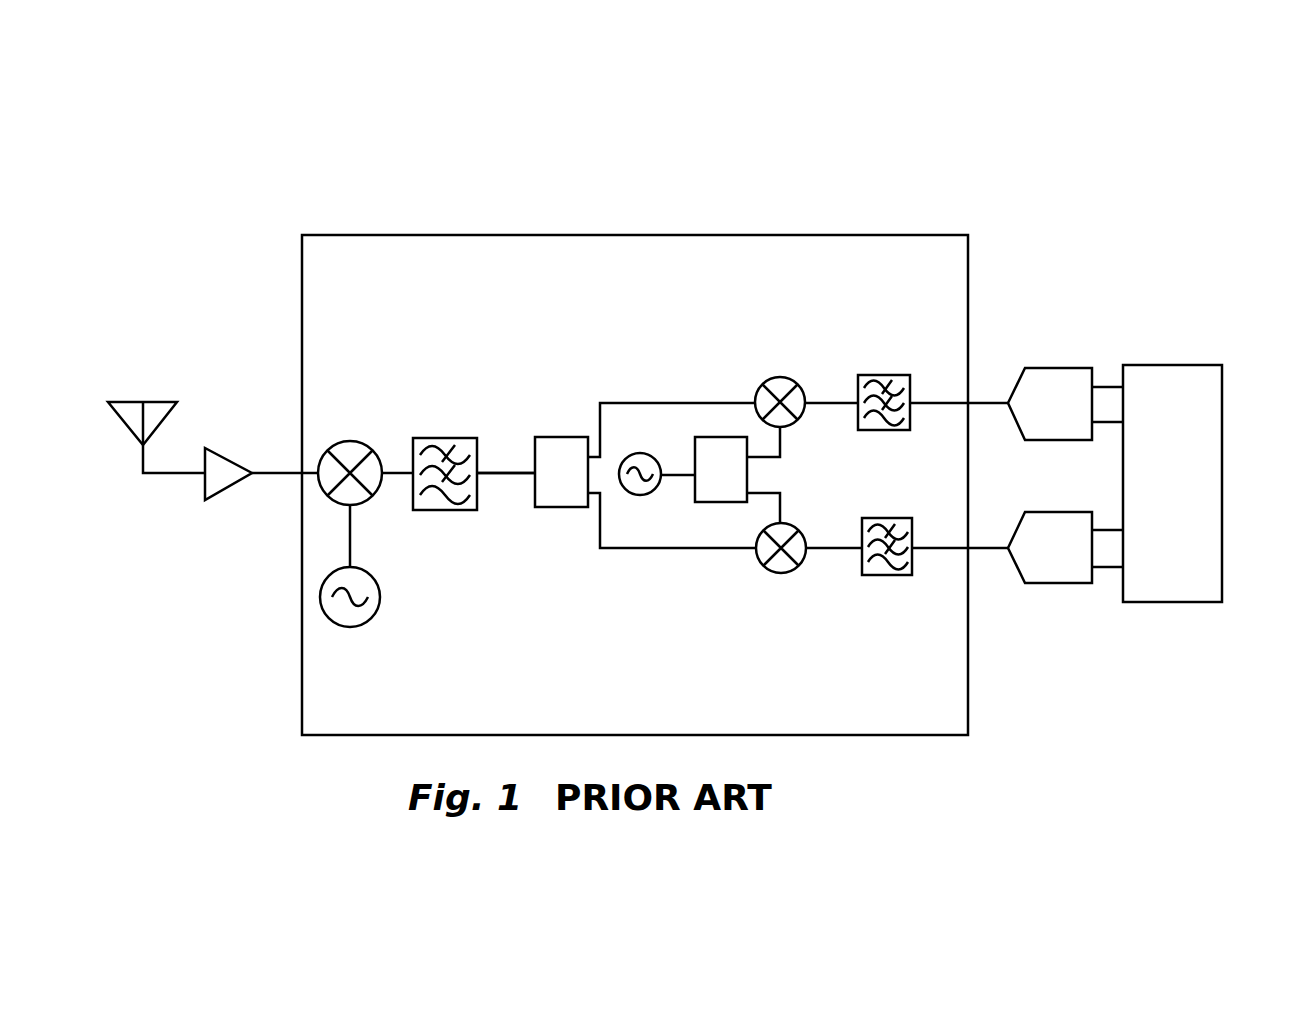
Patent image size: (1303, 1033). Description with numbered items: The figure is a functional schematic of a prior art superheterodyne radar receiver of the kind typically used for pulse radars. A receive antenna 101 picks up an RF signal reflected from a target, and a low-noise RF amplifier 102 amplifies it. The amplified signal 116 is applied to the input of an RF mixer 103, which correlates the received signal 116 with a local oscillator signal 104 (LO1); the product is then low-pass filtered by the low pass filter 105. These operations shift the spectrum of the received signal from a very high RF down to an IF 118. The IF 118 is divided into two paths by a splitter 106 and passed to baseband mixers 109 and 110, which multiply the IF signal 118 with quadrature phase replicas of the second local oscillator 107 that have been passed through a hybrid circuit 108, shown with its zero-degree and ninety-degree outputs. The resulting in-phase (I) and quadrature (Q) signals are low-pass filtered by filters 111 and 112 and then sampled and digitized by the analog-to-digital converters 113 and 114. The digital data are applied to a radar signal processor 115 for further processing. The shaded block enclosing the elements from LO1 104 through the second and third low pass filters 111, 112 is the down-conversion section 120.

The receive antenna 101 is at (130, 432).
The low-noise RF amplifier 102 is at (223, 447).
The RF mixer 103 is at (372, 448).
The local oscillator signal 104 is at (330, 624).
The low pass filter 105 is at (453, 438).
The splitter 106 is at (560, 437).
The second local oscillator 107 is at (633, 453).
The hybrid circuit 108 is at (695, 482).
The baseband mixer 109 is at (757, 395).
The baseband mixer 110 is at (755, 557).
The low pass filter 111 is at (885, 375).
The low pass filter 112 is at (885, 575).
The analog-to-digital converter 113 is at (1057, 368).
The analog-to-digital converter 114 is at (1025, 583).
The radar signal processor 115 is at (1222, 527).
The amplified signal 116 is at (265, 472).
The IF signal 118 is at (513, 478).
The down-conversion section 120 is at (788, 226).